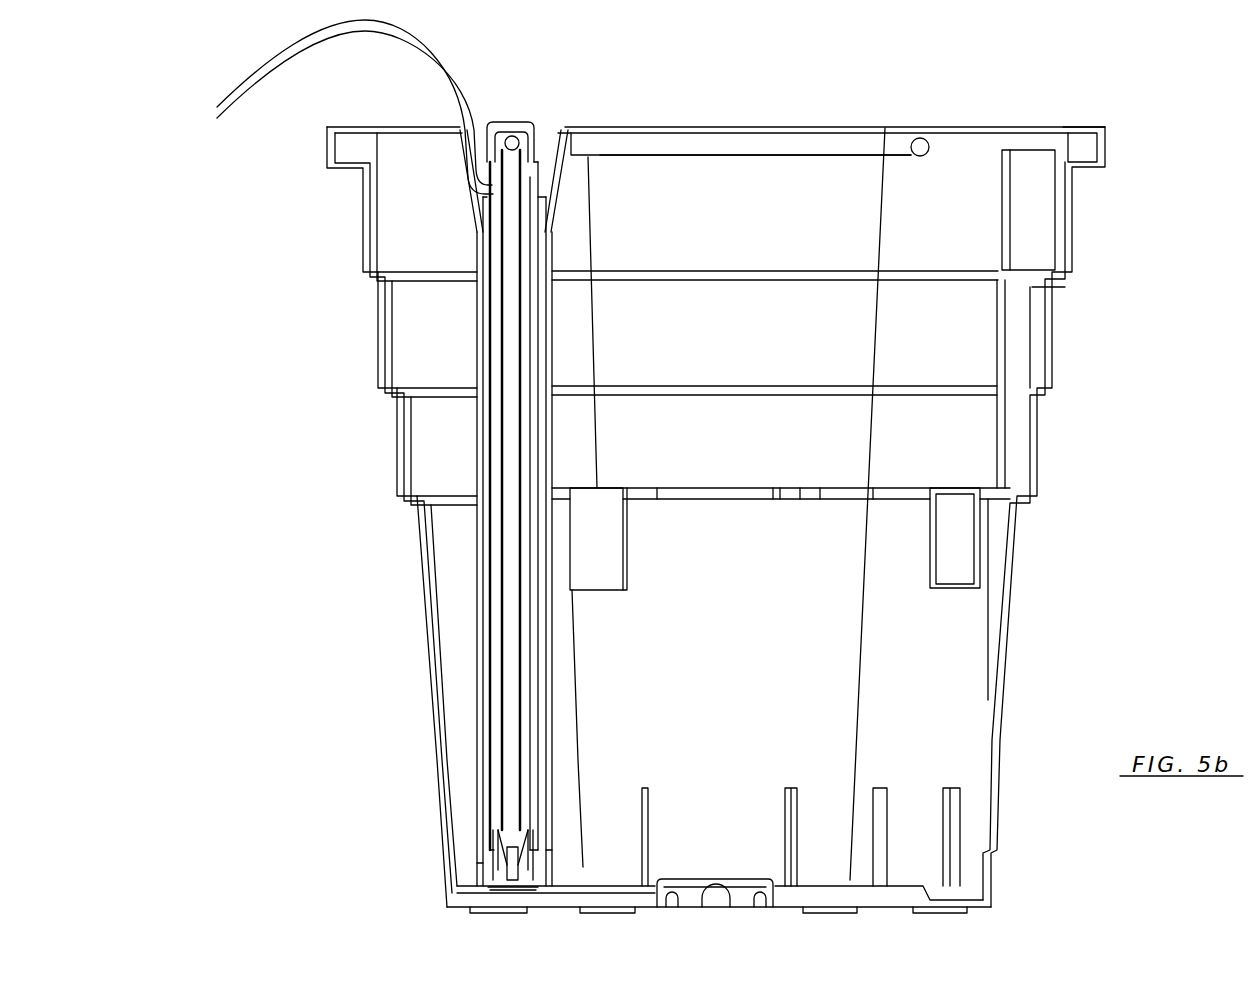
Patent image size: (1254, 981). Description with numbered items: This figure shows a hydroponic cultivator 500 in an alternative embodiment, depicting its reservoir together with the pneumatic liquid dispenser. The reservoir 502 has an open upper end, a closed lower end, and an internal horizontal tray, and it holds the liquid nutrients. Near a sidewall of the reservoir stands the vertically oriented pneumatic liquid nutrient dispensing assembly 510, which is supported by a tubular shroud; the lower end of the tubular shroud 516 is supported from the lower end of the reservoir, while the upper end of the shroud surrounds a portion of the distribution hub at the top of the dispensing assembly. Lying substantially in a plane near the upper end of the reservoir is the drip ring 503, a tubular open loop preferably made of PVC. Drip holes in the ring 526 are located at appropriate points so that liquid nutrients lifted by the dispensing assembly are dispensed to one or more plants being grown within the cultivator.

The hydroponic cultivator 500 is at (1120, 94).
The reservoir 502 is at (1017, 602).
The drip ring 503 is at (783, 148).
The pneumatic liquid nutrient dispensing assembly 510 is at (550, 109).
The lower end of the tubular shroud 516 is at (483, 848).
The drip holes in the ring 526 is at (684, 160).